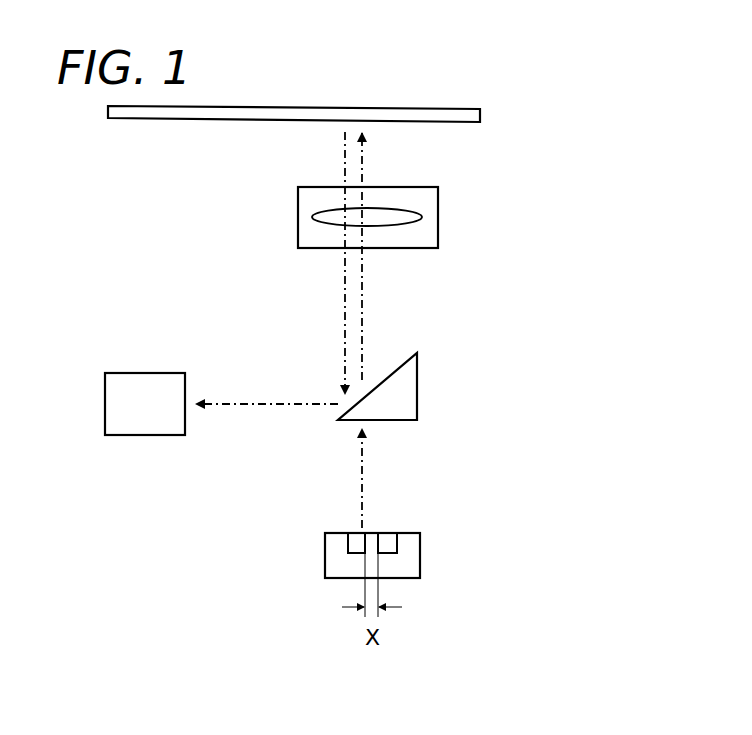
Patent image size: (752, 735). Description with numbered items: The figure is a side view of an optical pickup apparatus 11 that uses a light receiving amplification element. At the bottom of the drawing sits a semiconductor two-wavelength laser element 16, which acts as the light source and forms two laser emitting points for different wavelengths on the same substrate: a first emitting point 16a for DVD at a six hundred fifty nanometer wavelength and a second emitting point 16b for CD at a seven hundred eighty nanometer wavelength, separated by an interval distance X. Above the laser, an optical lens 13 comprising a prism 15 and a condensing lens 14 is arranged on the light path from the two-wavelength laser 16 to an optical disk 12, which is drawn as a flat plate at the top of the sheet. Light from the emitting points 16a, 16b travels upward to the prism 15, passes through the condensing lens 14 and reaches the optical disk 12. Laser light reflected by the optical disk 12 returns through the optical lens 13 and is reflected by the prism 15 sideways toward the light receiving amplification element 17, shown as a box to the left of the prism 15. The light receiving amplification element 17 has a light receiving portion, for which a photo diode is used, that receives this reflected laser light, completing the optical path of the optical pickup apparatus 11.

The optical pickup apparatus 11 is at (541, 75).
The optical disk 12 is at (434, 118).
The optical lens 13 is at (430, 200).
The condensing lens 14 is at (328, 218).
The prism 15 is at (408, 404).
The semiconductor two-wavelength laser element 16 is at (407, 570).
The first emitting point 16a is at (350, 546).
The second emitting point 16b is at (394, 546).
The light receiving amplification element 17 is at (128, 423).